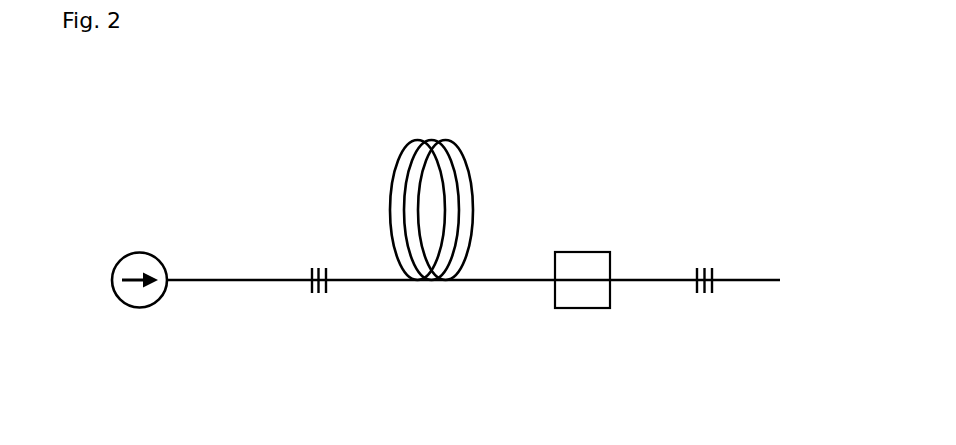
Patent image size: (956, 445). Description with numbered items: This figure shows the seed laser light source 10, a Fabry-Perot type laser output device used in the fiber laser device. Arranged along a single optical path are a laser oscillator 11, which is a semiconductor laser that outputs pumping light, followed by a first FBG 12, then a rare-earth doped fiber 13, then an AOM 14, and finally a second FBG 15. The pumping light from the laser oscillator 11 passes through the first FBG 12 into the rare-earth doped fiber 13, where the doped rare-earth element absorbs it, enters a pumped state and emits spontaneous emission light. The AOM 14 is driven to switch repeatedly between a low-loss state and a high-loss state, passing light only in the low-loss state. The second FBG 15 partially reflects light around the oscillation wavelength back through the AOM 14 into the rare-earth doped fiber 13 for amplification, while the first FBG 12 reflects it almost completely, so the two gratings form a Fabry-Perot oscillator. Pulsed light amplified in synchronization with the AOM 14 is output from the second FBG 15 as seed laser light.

The seed laser light source 10 is at (615, 124).
The laser oscillator 11 is at (140, 253).
The first FBG 12 is at (311, 288).
The rare-earth doped fiber 13 is at (392, 279).
The AOM 14 is at (582, 252).
The second FBG 15 is at (697, 290).